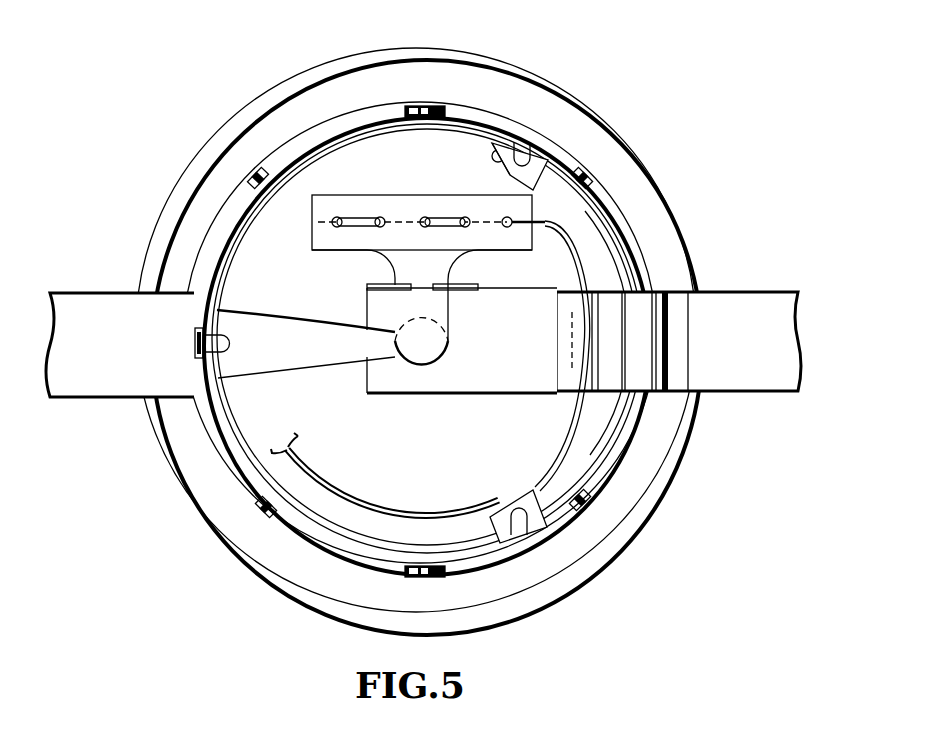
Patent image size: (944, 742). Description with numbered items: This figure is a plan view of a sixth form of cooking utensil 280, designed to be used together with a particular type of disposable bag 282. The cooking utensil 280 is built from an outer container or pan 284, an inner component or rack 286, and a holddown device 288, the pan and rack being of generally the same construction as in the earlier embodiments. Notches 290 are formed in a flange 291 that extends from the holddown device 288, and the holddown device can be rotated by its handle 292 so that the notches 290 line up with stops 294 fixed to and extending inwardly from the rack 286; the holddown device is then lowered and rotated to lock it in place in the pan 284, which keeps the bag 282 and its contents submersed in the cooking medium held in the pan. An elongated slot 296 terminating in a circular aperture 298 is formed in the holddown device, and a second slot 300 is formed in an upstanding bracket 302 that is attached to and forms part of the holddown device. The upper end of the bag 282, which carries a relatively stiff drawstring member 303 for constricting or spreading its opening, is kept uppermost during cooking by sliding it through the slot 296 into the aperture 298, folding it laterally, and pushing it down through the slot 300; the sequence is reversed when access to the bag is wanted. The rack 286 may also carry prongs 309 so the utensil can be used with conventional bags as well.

The cooking utensil 280 is at (160, 203).
The disposable bag 282 is at (494, 258).
The outer container or pan 284 is at (178, 508).
The inner component or rack 286 is at (338, 108).
The holddown device 288 is at (417, 449).
The notches 290 is at (491, 156).
The flange 291 is at (388, 128).
The handle 292 is at (708, 388).
The stops 294 is at (548, 160).
The elongated slot 296 is at (286, 330).
The circular aperture 298 is at (447, 352).
The second slot 300 is at (425, 291).
The upstanding bracket 302 is at (368, 286).
The drawstring member 303 is at (404, 515).
The prongs 309 is at (254, 171).